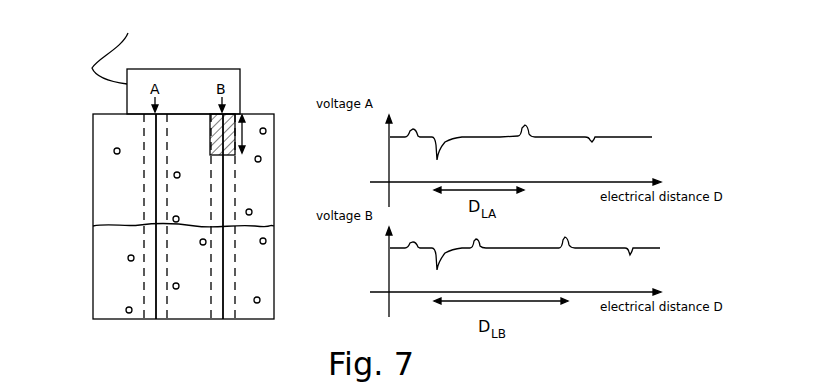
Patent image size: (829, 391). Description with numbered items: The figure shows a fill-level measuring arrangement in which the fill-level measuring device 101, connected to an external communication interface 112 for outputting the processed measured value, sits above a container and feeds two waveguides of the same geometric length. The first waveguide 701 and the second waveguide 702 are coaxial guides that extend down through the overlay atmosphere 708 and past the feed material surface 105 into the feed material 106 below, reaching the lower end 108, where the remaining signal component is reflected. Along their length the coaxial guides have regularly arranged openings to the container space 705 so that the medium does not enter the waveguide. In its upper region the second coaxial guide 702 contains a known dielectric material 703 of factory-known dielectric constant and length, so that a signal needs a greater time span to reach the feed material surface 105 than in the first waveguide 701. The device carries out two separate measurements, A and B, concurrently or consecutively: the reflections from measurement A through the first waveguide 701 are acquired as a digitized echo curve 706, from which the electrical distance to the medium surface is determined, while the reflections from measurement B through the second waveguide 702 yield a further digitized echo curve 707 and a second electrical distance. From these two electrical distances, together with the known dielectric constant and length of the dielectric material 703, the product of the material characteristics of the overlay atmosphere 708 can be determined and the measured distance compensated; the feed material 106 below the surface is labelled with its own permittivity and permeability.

The fill-level measuring device 101 is at (208, 69).
The external communication interface 112 is at (116, 46).
The first waveguide 701 is at (141, 150).
The second waveguide 702 is at (235, 197).
The dielectric material 703 is at (228, 116).
The overlay atmosphere 708 is at (110, 213).
The feed material surface 105 is at (112, 229).
The lower medium 106 is at (110, 309).
The lower end of the waveguide 108 is at (248, 321).
The container space 705 is at (260, 218).
The digitized echo curve 706 is at (622, 132).
The further digitized echo curve 707 is at (540, 248).